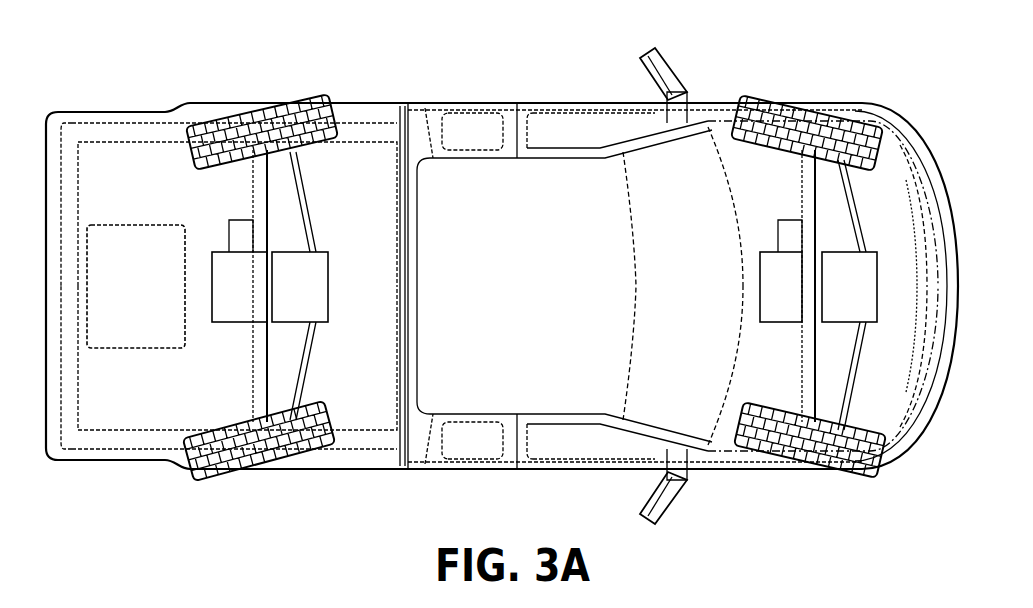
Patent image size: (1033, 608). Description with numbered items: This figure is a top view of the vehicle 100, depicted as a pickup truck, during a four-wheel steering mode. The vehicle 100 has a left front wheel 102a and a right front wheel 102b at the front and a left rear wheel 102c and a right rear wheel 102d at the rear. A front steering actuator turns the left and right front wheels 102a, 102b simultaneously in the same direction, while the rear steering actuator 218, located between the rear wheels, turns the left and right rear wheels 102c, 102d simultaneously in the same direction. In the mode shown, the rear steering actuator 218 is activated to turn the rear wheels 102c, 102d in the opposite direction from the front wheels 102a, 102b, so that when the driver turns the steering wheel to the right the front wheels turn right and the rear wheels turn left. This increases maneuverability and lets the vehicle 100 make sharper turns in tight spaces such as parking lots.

The vehicle 100 is at (171, 59).
The left front wheel 102a is at (818, 110).
The right front wheel 102b is at (800, 462).
The left rear wheel 102c is at (254, 112).
The right rear wheel 102d is at (268, 462).
The rear steering actuator 218 is at (326, 284).